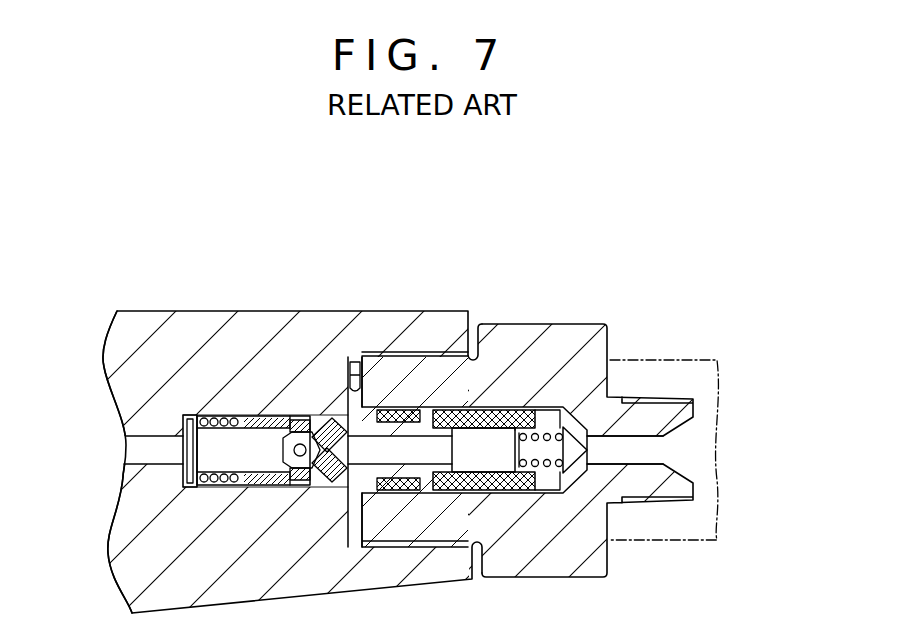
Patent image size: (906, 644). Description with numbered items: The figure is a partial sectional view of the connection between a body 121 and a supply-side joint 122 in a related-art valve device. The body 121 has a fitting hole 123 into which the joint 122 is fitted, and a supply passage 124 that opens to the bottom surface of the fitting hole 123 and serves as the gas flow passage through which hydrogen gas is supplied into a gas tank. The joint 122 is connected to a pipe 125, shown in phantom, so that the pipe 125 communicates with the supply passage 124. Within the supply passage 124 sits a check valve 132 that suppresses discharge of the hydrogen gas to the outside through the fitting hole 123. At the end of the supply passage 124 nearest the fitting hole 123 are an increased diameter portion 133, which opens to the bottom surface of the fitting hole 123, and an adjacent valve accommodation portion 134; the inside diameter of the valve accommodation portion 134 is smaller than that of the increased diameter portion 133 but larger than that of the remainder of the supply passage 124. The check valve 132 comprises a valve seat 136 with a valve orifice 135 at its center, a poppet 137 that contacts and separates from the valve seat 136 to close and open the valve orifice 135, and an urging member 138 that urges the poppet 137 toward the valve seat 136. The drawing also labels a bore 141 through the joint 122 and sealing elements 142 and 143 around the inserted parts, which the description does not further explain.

The body 121 is at (113, 347).
The joint 122 is at (618, 332).
The fitting hole 123 is at (432, 352).
The supply passage 124 is at (140, 463).
The pipe 125 is at (703, 333).
The check valve 132 is at (170, 401).
The increased diameter portion 133 is at (351, 386).
The valve accommodation portion 134 is at (250, 416).
The valve orifice 135 is at (320, 418).
The valve seat 136 is at (334, 484).
The poppet 137 is at (265, 479).
The urging member 138 is at (188, 484).
The flow hole 141 is at (682, 454).
The seal member 142 is at (432, 410).
The seal member 143 is at (358, 488).